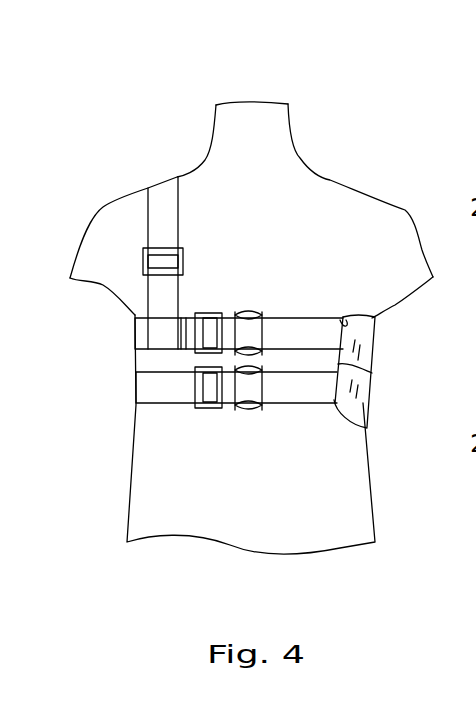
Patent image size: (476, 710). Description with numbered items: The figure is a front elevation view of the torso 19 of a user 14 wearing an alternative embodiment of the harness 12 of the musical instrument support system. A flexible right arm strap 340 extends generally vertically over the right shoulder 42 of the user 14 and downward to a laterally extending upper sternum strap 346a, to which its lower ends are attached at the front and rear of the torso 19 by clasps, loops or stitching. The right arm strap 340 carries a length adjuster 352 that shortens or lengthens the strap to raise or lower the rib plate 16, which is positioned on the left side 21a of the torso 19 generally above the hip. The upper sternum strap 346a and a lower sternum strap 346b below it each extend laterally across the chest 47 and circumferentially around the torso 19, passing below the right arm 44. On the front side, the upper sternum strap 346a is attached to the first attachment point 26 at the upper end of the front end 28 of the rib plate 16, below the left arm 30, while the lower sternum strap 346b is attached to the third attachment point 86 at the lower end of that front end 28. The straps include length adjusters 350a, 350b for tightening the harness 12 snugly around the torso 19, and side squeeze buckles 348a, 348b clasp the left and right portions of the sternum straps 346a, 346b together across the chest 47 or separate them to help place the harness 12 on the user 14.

The harness 12 is at (156, 122).
The user 14 is at (320, 92).
The torso 19 is at (380, 180).
The chest 47 is at (257, 262).
The right arm strap 340 is at (160, 195).
The length adjuster 352 is at (145, 262).
The right shoulder 42 is at (113, 225).
The right arm 44 is at (134, 313).
The upper sternum strap 346a is at (133, 330).
The lower sternum strap 346b is at (143, 385).
The length adjuster 350a is at (198, 352).
The length adjuster 350b is at (196, 405).
The buckle 348a is at (272, 318).
The buckle 348b is at (240, 405).
The rib plate 16 is at (357, 352).
The first attachment point 26 is at (375, 318).
The front end 28 is at (372, 373).
The third attachment point 86 is at (338, 432).
The left side 21a is at (340, 403).
The left arm 30 is at (415, 252).